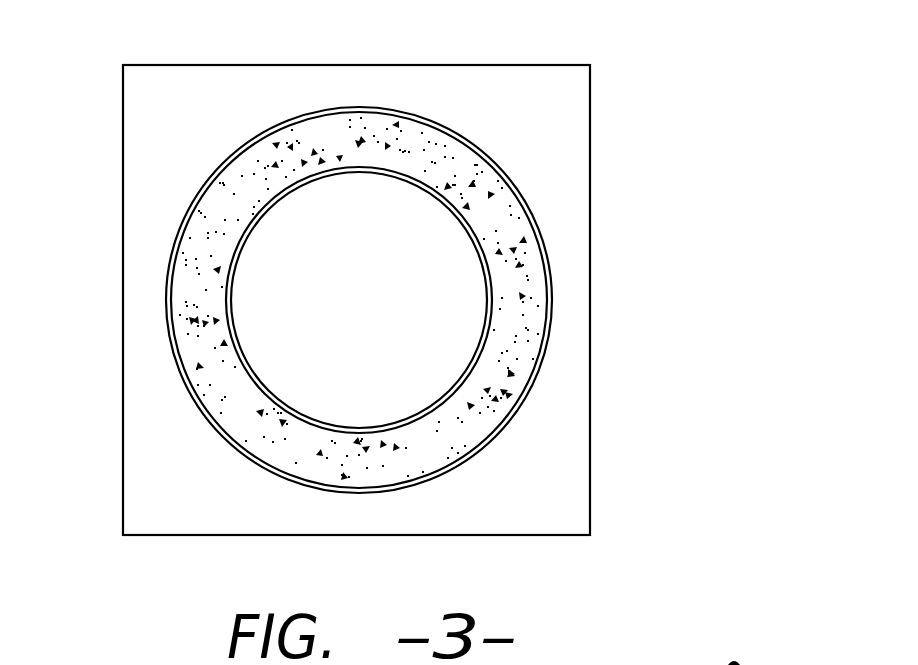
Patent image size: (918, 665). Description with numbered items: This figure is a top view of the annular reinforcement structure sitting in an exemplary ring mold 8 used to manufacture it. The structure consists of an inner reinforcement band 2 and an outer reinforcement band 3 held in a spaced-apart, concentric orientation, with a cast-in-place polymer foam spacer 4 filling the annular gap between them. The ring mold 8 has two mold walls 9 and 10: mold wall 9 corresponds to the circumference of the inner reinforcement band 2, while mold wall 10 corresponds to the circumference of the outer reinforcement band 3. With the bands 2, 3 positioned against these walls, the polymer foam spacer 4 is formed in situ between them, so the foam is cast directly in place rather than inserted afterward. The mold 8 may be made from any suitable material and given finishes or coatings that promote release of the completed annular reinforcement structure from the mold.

The inner reinforcement band 2 is at (248, 218).
The outer reinforcement band 3 is at (168, 263).
The polymer foam spacer 4 is at (207, 338).
The ring mold 8 is at (668, 90).
The mold wall 9 is at (480, 290).
The mold wall 10 is at (533, 382).